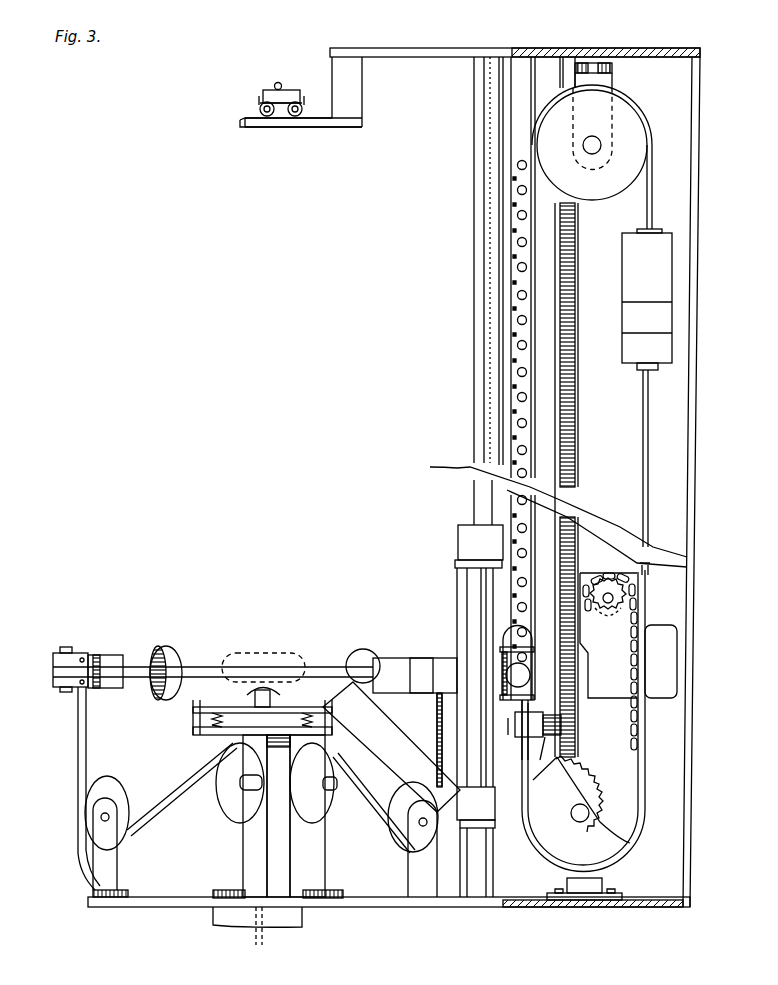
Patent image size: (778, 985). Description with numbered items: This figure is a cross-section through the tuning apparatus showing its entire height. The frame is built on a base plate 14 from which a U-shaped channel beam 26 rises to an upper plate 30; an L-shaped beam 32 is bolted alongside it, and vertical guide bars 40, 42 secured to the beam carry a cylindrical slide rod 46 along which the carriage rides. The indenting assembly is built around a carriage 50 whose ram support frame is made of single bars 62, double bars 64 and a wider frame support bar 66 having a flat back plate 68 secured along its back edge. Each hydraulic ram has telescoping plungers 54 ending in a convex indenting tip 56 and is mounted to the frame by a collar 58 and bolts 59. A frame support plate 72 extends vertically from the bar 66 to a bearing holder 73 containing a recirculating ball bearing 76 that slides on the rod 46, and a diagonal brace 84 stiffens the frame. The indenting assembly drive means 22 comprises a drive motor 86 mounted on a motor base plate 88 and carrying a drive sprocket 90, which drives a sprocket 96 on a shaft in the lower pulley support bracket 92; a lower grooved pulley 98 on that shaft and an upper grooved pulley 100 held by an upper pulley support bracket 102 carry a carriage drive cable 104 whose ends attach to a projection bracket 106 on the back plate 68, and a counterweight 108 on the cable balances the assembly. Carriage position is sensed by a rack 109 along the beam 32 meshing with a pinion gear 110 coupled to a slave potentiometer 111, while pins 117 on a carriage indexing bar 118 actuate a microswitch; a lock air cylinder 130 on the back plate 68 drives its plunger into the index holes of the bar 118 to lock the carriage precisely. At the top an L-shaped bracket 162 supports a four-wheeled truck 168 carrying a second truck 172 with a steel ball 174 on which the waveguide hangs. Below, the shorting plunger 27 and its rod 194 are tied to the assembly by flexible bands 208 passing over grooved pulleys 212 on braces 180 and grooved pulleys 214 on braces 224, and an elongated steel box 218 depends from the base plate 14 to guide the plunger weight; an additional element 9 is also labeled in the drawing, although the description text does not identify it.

The upper plate 30 is at (418, 50).
The U-shaped channel beam 26 is at (617, 401).
The base plate 14 is at (150, 900).
The L-shaped bracket 162 is at (240, 122).
The four-wheeled truck 168 is at (261, 109).
The second four-wheeled truck 172 is at (270, 90).
The steel ball 174 is at (281, 84).
The cylindrical slide rod 46 is at (474, 228).
The bar 40 is at (515, 345).
The pins 117 is at (515, 262).
The bar 42 is at (535, 140).
The L-shaped beam 32 is at (553, 389).
The upper pulley support bracket 102 is at (612, 68).
The upper grooved pulley 100 is at (628, 110).
The carriage drive cable 104 is at (652, 140).
The counterweight 108 is at (682, 245).
The carriage indexing bar 118 is at (556, 511).
The rack 109 is at (594, 495).
The recirculating ball bearing 76 is at (470, 518).
The bearing holder 73 is at (458, 545).
The frame support plate 72 is at (458, 622).
The flat back plate 68 is at (518, 630).
The projection bracket 106 is at (522, 648).
The lock air cylinder 130 is at (522, 673).
The pinion gear 110 is at (545, 720).
The motor base plate 88 is at (583, 573).
The drive sprocket 90 is at (608, 615).
The sprocket 96 is at (596, 758).
The indenting assembly drive means 22 is at (654, 736).
The drive motor 86 is at (643, 575).
The lower pulley support bracket 92 is at (603, 874).
The lower grooved pulley 98 is at (577, 804).
The slave potentiometer 111 is at (581, 800).
The telescoping plungers 54 is at (185, 667).
The indenting tip 56 is at (263, 662).
The single bars 62 is at (53, 672).
The double bars 64 is at (112, 660).
The frame support bar 66 is at (435, 660).
The collar 58 is at (160, 652).
The bolts 59 is at (162, 698).
The braces 224 is at (88, 882).
The shorting plunger 27 is at (242, 700).
The carriage 50 is at (316, 699).
The column 9 is at (278, 745).
The braces 180 is at (245, 866).
The grooved pulleys 212 is at (222, 818).
The grooved pulleys 214 is at (98, 800).
The flexible bands 208 is at (160, 785).
The brace 84 is at (374, 715).
The elongated steel box 218 is at (302, 914).
The rod 194 is at (262, 936).